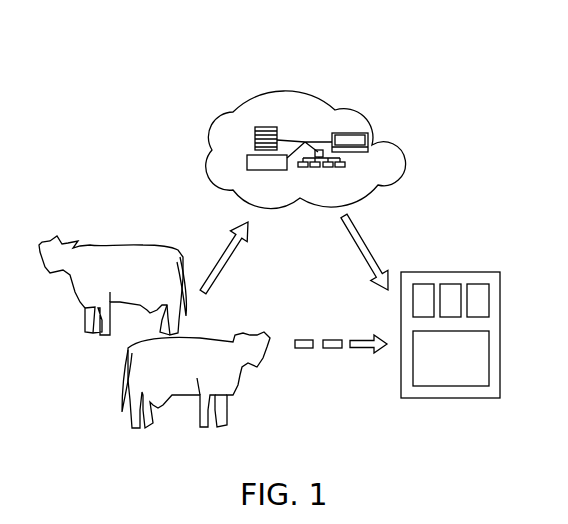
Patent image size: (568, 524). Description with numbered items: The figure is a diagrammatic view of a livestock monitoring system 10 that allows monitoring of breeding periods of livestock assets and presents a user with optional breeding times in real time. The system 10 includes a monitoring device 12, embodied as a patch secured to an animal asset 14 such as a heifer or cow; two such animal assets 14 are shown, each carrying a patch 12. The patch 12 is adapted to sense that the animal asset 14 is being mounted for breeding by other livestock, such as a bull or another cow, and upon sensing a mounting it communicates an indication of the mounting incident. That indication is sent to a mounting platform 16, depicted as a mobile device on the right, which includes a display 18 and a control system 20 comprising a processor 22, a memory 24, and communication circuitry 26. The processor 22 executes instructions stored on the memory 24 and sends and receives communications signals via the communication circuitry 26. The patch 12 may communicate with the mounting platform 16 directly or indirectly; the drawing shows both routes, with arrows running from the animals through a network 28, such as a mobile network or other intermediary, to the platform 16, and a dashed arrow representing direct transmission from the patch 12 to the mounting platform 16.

The livestock monitoring system 10 is at (118, 110).
The monitoring device 12 is at (163, 247).
The animal asset 14 is at (39, 256).
The mounting platform 16 is at (483, 271).
The display 18 is at (478, 343).
The control system 20 is at (413, 323).
The processor 22 is at (428, 283).
The memory 24 is at (447, 283).
The communication circuitry 26 is at (477, 283).
The network 28 is at (354, 98).